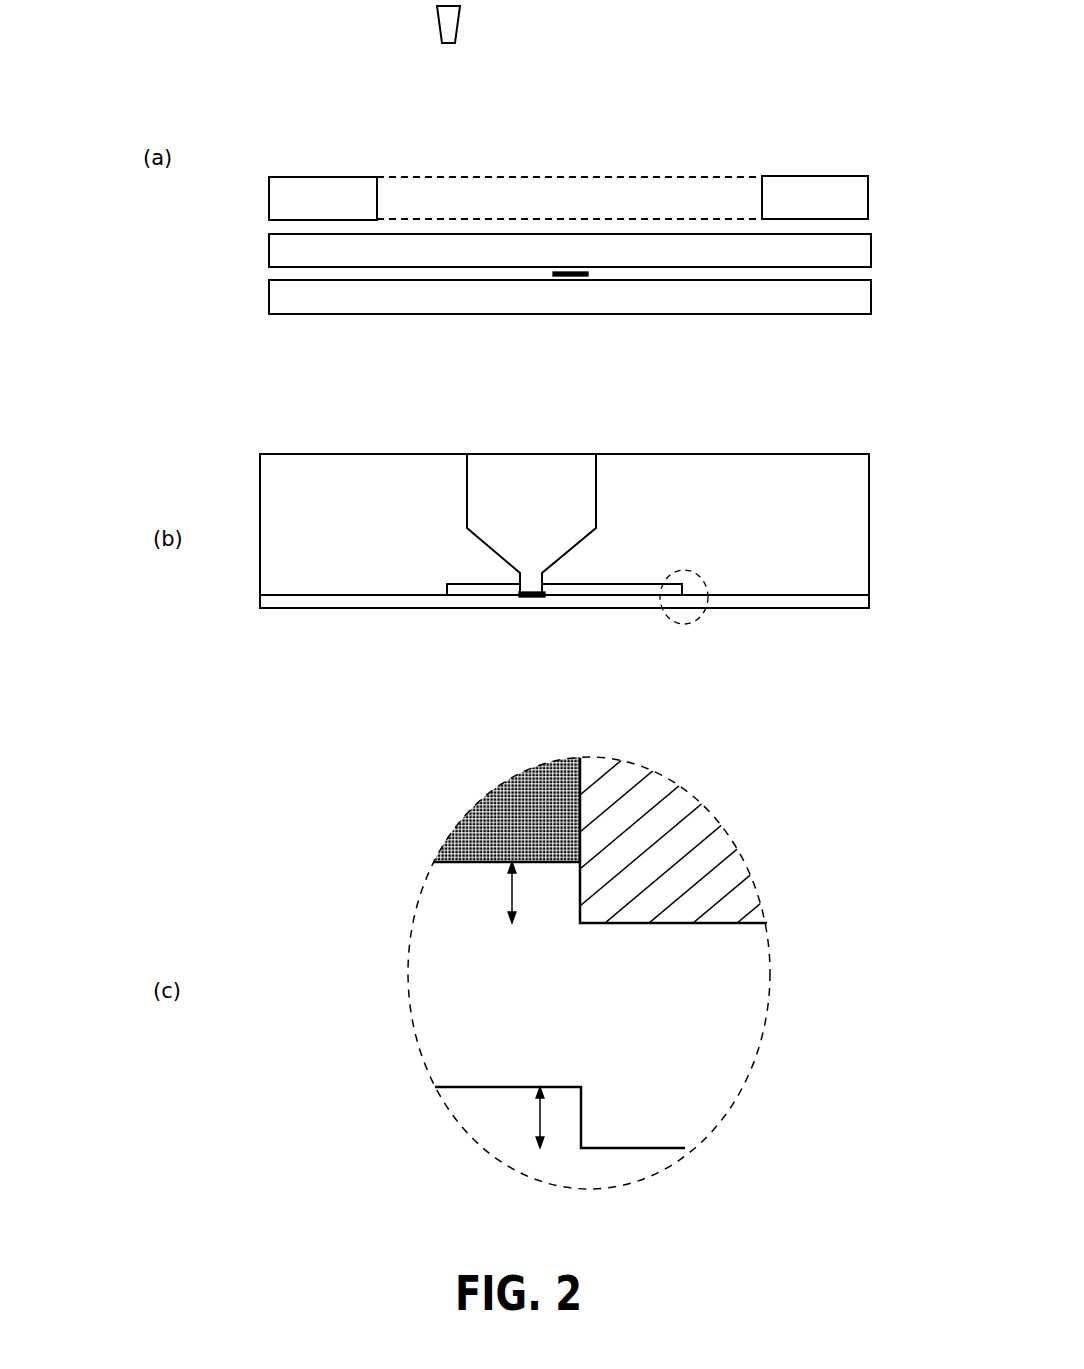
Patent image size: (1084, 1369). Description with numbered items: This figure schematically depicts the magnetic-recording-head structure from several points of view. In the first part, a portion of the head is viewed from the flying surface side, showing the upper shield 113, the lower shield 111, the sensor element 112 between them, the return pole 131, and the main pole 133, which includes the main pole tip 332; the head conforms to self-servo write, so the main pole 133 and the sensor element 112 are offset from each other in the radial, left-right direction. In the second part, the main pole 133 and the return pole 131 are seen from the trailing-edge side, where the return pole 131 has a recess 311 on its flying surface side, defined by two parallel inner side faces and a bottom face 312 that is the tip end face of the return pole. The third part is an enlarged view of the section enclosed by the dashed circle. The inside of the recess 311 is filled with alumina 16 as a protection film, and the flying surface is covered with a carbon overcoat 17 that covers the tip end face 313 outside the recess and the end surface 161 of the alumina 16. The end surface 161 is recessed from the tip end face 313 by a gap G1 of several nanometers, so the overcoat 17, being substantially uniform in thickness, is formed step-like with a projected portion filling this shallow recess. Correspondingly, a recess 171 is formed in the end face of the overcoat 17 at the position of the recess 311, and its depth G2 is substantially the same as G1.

The lower shield 111 is at (269, 293).
The sensor element 112 is at (571, 277).
The upper shield 113 is at (269, 250).
The return pole 131 is at (345, 177).
The main pole 133 is at (460, 24).
The main pole tip 332 is at (516, 33).
The alumina 16 is at (606, 596).
The end surface of the alumina 161 is at (543, 862).
The carbon overcoat 17 is at (415, 608).
The recess of the overcoat 171 is at (581, 1118).
The recess 311 is at (762, 193).
The bottom face of the recess 312 is at (497, 587).
The tip end face 313 is at (340, 210).
The gap G1 is at (494, 892).
The gap G2 is at (525, 1117).